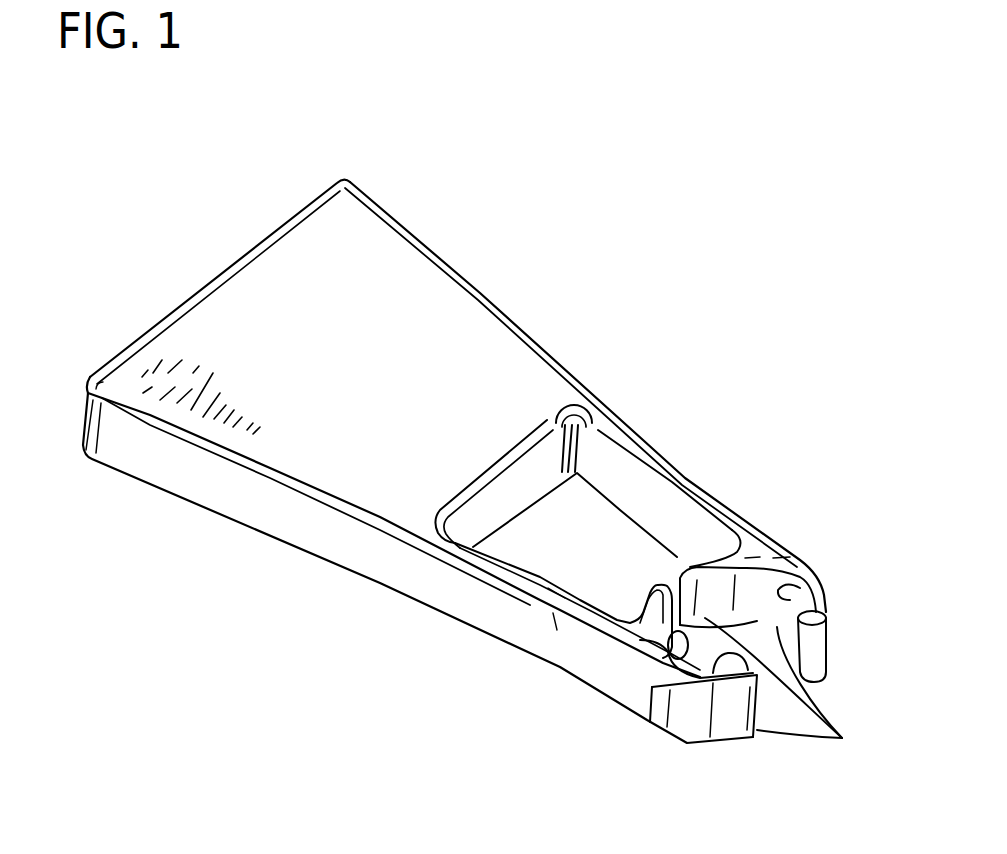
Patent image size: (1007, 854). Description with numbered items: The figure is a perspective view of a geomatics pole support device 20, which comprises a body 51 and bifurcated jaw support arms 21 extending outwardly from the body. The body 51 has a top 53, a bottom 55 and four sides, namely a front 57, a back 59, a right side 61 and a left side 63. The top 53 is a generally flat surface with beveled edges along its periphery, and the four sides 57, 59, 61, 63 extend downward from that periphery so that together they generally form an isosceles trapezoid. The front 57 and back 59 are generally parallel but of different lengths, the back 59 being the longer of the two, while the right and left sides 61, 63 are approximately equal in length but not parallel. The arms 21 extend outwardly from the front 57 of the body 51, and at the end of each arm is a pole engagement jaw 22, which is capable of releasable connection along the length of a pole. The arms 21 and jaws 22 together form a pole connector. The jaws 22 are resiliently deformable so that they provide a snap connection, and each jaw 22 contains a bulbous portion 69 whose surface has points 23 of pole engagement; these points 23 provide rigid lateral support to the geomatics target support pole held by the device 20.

The geomatics pole support device 20 is at (667, 237).
The jaw support arms 21 is at (683, 482).
The pole engagement jaws 22 is at (784, 574).
The points of pole engagement 23 is at (790, 685).
The body 51 is at (432, 244).
The top 53 is at (267, 304).
The bottom 55 is at (263, 533).
The front 57 is at (508, 480).
The back 59 is at (140, 333).
The right side 61 is at (510, 322).
The left side 63 is at (188, 470).
The bulbous portion 69 is at (803, 587).